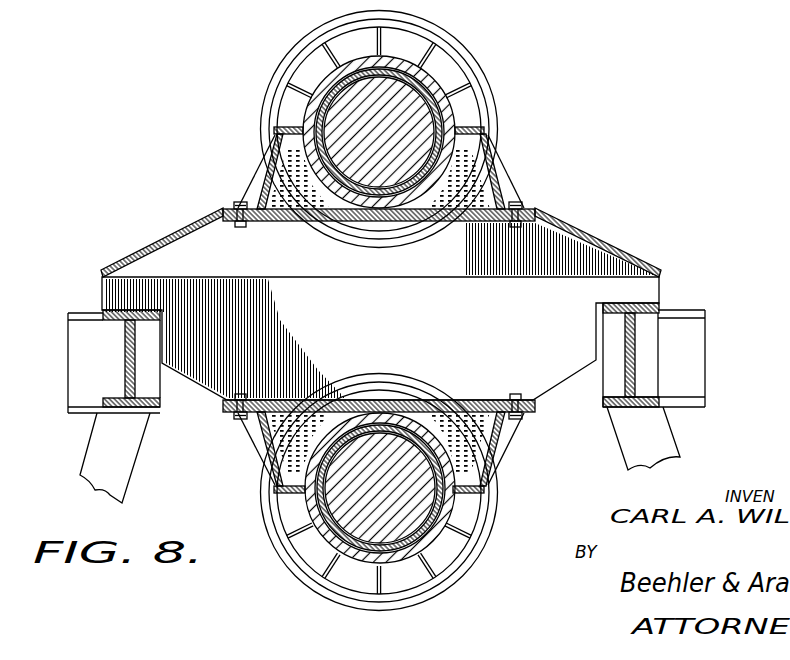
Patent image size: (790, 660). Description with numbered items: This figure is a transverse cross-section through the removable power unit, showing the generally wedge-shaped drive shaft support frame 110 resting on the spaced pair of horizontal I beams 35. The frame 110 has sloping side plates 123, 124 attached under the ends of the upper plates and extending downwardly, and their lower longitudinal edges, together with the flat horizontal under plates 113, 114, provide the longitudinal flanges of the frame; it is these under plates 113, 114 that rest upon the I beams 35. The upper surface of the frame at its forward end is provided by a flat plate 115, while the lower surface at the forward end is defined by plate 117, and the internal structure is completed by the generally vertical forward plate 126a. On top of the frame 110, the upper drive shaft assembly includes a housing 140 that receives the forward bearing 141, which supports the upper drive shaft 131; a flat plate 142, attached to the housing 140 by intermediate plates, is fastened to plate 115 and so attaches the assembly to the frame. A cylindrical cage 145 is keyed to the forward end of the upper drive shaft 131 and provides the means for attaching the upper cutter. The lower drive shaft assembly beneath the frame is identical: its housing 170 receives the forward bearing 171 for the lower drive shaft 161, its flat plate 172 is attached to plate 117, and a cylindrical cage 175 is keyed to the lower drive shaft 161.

The drive shaft support frame 110 is at (616, 249).
The under plate 113 is at (632, 303).
The under plate 114 is at (122, 308).
The flat plate 115 is at (320, 223).
The plate 117 is at (460, 400).
The sloping side plate 123 is at (565, 226).
The sloping side plate 124 is at (178, 233).
The forward plate 126a is at (405, 330).
The upper drive shaft 131 is at (377, 160).
The housing 140 is at (311, 104).
The forward bearing 141 is at (321, 118).
The flat plate 142 is at (288, 193).
The cylindrical cage 145 is at (498, 90).
The lower drive shaft 161 is at (385, 453).
The housing 170 is at (427, 538).
The forward bearing 171 is at (320, 503).
The flat plate 172 is at (270, 450).
The cylindrical cage 175 is at (290, 577).
The horizontal beam 35 is at (127, 373).